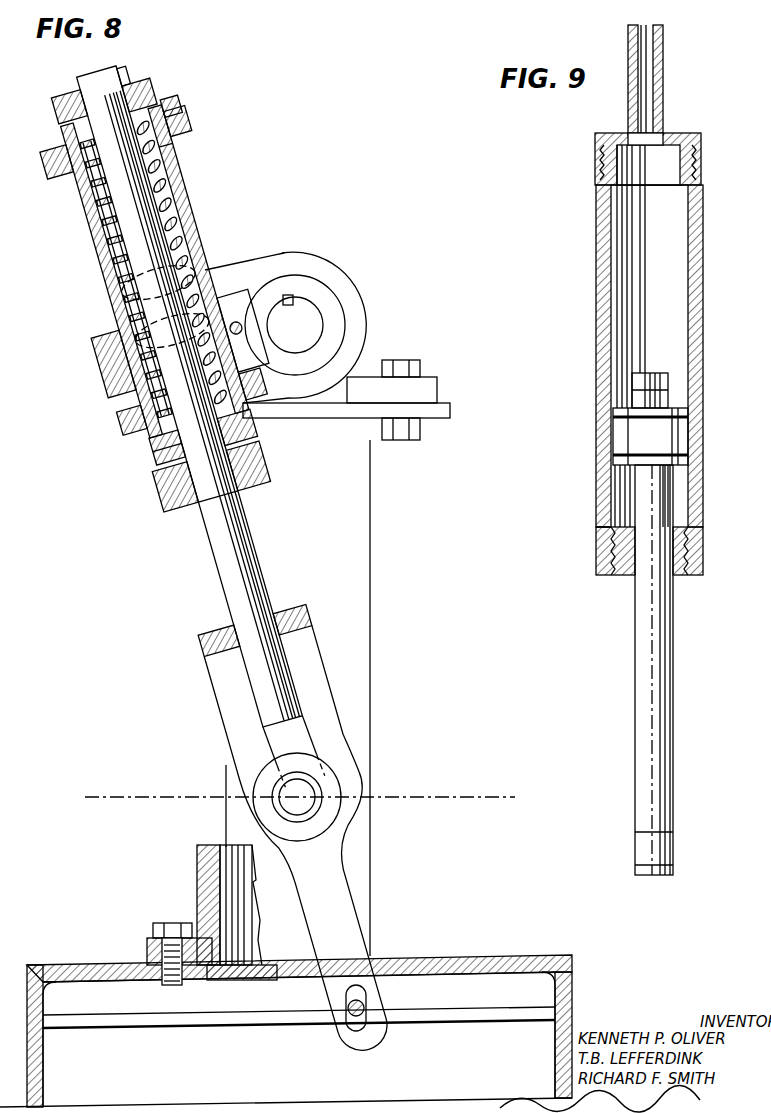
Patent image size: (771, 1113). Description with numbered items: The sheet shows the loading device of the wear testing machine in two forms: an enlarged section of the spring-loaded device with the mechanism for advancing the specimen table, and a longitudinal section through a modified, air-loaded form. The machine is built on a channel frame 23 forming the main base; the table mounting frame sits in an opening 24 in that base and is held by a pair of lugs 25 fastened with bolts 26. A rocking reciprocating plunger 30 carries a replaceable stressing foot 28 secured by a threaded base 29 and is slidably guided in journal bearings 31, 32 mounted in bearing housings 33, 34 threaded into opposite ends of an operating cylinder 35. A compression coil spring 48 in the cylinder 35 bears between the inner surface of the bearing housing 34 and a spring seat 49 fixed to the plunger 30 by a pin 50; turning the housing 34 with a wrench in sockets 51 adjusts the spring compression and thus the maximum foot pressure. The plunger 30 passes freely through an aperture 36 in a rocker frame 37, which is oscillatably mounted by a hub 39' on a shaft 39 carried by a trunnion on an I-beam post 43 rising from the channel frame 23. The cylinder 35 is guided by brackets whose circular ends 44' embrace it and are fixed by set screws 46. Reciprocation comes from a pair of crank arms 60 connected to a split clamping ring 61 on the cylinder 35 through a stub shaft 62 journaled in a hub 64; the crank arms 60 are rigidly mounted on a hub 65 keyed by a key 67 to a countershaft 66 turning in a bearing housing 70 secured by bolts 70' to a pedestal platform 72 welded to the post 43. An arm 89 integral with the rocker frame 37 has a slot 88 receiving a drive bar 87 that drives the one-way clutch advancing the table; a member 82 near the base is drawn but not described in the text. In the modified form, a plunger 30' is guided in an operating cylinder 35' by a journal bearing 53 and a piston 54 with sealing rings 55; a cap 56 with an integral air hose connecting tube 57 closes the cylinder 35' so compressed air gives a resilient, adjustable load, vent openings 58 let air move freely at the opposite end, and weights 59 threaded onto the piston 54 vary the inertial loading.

In FIG. 8, the channel frame 23 is at (471, 956).
In FIG. 8, the opening 24 is at (383, 966).
In FIG. 8, the lugs 25 is at (150, 950).
In FIG. 8, the bolts 26 is at (170, 930).
In FIG. 9, the stressing foot 28 is at (673, 868).
In FIG. 9, the base 29 is at (668, 840).
In FIG. 8, the rocking reciprocating plunger 30 is at (201, 427).
In FIG. 9, the plunger 30' is at (665, 510).
In FIG. 8, the journal bearing 31 is at (190, 503).
In FIG. 8, the journal bearing 32 is at (78, 92).
In FIG. 8, the bearing housing 33 is at (163, 505).
In FIG. 8, the bearing housing 34 is at (150, 90).
In FIG. 8, the operating cylinder 35 is at (146, 281).
In FIG. 9, the operating cylinder 35' is at (632, 356).
In FIG. 8, the aperture 36 is at (270, 614).
In FIG. 8, the rocker frame 37 is at (228, 703).
In FIG. 8, the shaft 39 is at (300, 803).
In FIG. 8, the hub 39' is at (331, 797).
In FIG. 8, the I-beam post 43 is at (350, 573).
In FIG. 8, the circular ends 44' is at (149, 263).
In FIG. 8, the set screws 46 is at (183, 122).
In FIG. 8, the compression coil spring 48 is at (150, 170).
In FIG. 8, the spring seat 49 is at (238, 430).
In FIG. 8, the pin 50 is at (155, 445).
In FIG. 8, the sockets 51 is at (128, 82).
In FIG. 9, the journal bearing 53 is at (690, 534).
In FIG. 9, the piston 54 is at (622, 440).
In FIG. 9, the piston sealing rings 55 is at (690, 455).
In FIG. 9, the cap 56 is at (670, 152).
In FIG. 9, the air hose connecting tube 57 is at (664, 92).
In FIG. 9, the vent openings 58 is at (603, 516).
In FIG. 9, the weights 59 is at (668, 398).
In FIG. 8, the crank arms 60 is at (227, 272).
In FIG. 8, the split clamping ring 61 is at (100, 370).
In FIG. 8, the stub shaft 62 is at (110, 322).
In FIG. 8, the hub 64 is at (107, 300).
In FIG. 8, the hub 65 is at (334, 304).
In FIG. 8, the countershaft 66 is at (312, 310).
In FIG. 8, the key 67 is at (292, 296).
In FIG. 8, the bearing housing 70 is at (392, 357).
In FIG. 8, the bolts 70' is at (419, 389).
In FIG. 8, the pedestal platform 72 is at (450, 410).
In FIG. 8, the base rail 82 is at (197, 1022).
In FIG. 8, the drive bar 87 is at (375, 1006).
In FIG. 8, the slot 88 is at (318, 1003).
In FIG. 8, the arm 89 is at (327, 934).